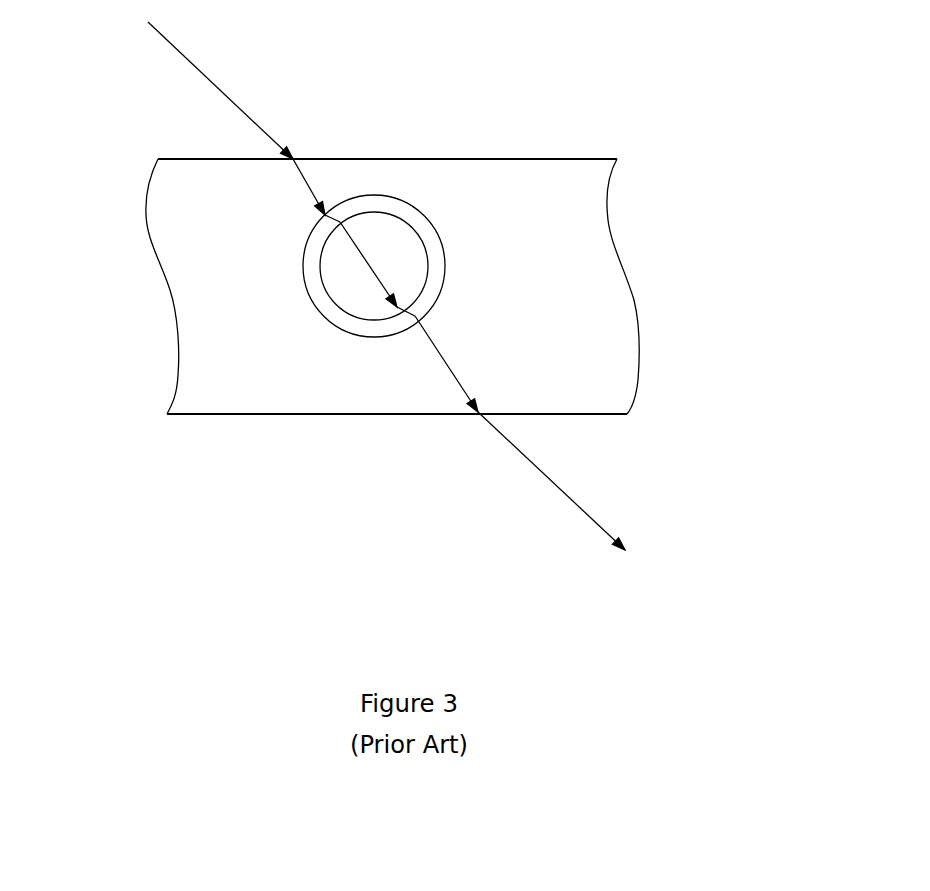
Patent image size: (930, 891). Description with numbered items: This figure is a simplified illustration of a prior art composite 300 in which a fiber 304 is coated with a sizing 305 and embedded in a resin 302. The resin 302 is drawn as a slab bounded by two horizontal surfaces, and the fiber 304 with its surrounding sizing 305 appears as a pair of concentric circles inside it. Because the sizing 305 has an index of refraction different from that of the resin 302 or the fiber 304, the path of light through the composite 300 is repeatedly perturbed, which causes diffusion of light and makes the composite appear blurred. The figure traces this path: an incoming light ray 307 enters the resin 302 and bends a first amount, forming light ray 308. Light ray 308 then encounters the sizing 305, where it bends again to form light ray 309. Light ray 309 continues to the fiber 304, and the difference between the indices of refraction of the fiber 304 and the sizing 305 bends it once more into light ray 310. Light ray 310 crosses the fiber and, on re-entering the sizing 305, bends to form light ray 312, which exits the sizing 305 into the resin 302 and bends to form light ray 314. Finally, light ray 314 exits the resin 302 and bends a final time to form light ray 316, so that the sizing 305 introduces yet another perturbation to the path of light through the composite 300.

The composite 300 is at (170, 483).
The resin 302 is at (617, 159).
The fiber 304 is at (406, 222).
The sizing 305 is at (435, 230).
The light ray 307 is at (162, 32).
The light ray 308 is at (300, 170).
The light ray 309 is at (340, 222).
The light ray 310 is at (347, 232).
The light ray 312 is at (415, 316).
The light ray 314 is at (447, 365).
The light ray 316 is at (543, 476).